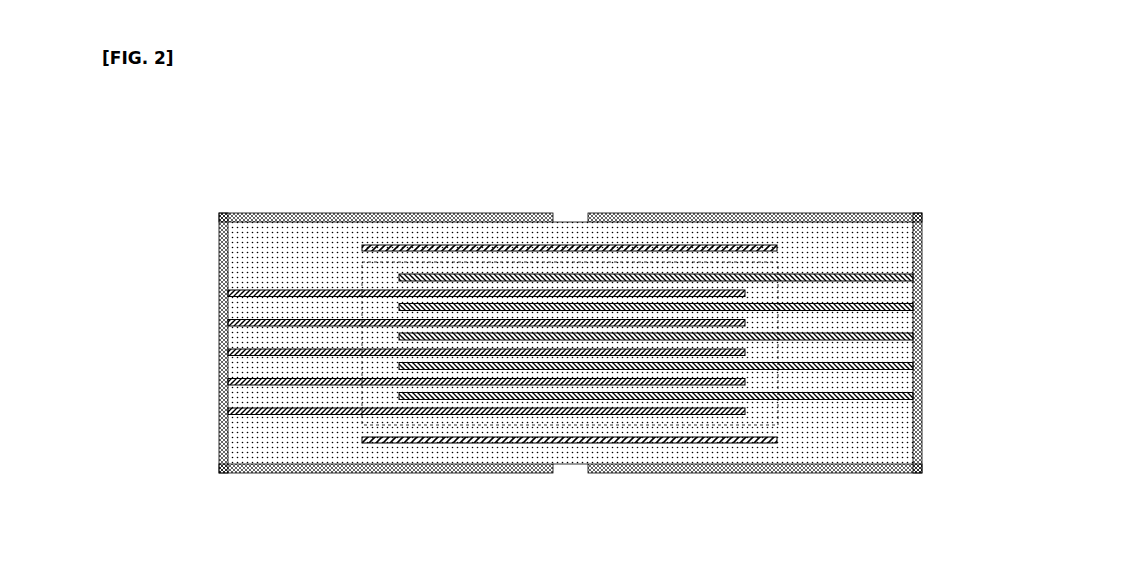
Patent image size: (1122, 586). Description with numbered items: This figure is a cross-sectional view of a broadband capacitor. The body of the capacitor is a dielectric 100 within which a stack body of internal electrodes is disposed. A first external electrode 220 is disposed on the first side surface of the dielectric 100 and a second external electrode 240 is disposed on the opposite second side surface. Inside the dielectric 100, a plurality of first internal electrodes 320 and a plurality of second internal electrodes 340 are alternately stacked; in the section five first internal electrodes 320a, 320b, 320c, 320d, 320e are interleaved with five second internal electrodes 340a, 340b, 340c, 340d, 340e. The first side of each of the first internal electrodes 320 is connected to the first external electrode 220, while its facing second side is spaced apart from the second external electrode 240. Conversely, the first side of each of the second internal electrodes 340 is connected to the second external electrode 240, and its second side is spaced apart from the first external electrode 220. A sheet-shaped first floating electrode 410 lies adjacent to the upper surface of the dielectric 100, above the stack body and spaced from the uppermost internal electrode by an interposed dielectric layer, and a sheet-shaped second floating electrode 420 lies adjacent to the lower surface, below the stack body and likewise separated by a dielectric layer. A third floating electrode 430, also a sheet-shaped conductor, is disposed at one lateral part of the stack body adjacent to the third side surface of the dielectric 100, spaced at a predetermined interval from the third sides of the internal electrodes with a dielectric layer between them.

The dielectric 100 is at (570, 304).
The first external electrode 220 is at (244, 213).
The second external electrode 240 is at (845, 213).
The plurality of first internal electrodes 320 is at (400, 352).
The first internal electrode 320a is at (219, 293).
The first internal electrode 320b is at (219, 322).
The first internal electrode 320c is at (219, 352).
The first internal electrode 320d is at (219, 382).
The first internal electrode 320e is at (434, 410).
The plurality of second internal electrodes 340 is at (742, 333).
The second internal electrode 340a is at (922, 272).
The second internal electrode 340b is at (922, 301).
The second internal electrode 340c is at (922, 331).
The second internal electrode 340d is at (922, 360).
The second internal electrode 340e is at (707, 392).
The first floating electrode 410 is at (662, 245).
The second floating electrode 420 is at (655, 443).
The third floating electrode 430 is at (746, 262).